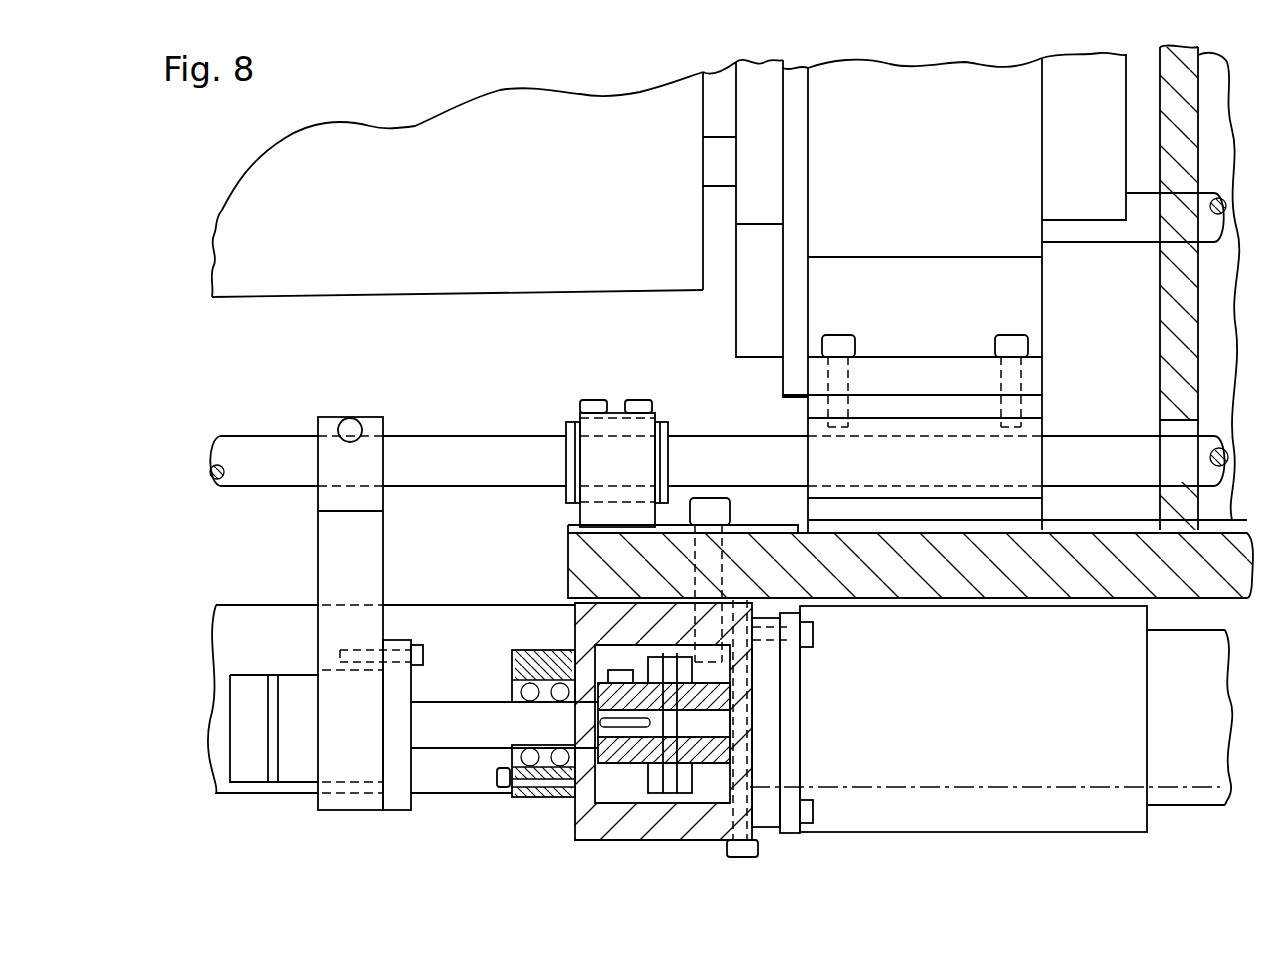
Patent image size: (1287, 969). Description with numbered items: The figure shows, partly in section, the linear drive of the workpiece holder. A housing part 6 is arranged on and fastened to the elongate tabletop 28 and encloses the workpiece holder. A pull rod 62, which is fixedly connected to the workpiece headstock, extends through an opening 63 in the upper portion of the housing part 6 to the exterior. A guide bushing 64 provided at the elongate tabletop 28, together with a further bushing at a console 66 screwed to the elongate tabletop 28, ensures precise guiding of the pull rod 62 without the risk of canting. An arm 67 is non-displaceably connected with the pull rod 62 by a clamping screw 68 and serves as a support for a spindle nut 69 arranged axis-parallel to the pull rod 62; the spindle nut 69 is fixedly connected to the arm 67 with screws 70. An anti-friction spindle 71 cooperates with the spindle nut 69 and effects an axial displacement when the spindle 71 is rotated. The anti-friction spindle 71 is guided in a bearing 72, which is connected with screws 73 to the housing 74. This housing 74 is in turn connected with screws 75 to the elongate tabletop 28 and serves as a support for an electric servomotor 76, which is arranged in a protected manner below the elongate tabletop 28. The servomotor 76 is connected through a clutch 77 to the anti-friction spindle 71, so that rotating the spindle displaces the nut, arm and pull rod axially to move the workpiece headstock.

The housing part 6 is at (1177, 323).
The elongate tabletop 28 is at (1063, 557).
The pull rod 62 is at (488, 453).
The opening 63 is at (1162, 422).
The guide bushing 64 is at (673, 420).
The console 66 is at (463, 618).
The arm 67 is at (337, 558).
The clamping screw 68 is at (350, 418).
The spindle nut 69 is at (397, 797).
The screws 70 is at (423, 658).
The anti-friction spindle 71 is at (470, 728).
The bearing 72 is at (538, 660).
The screws 73 is at (503, 787).
The housing 74 is at (700, 817).
The screws 75 is at (748, 848).
The electric servomotor 76 is at (1097, 808).
The clutch 77 is at (633, 755).